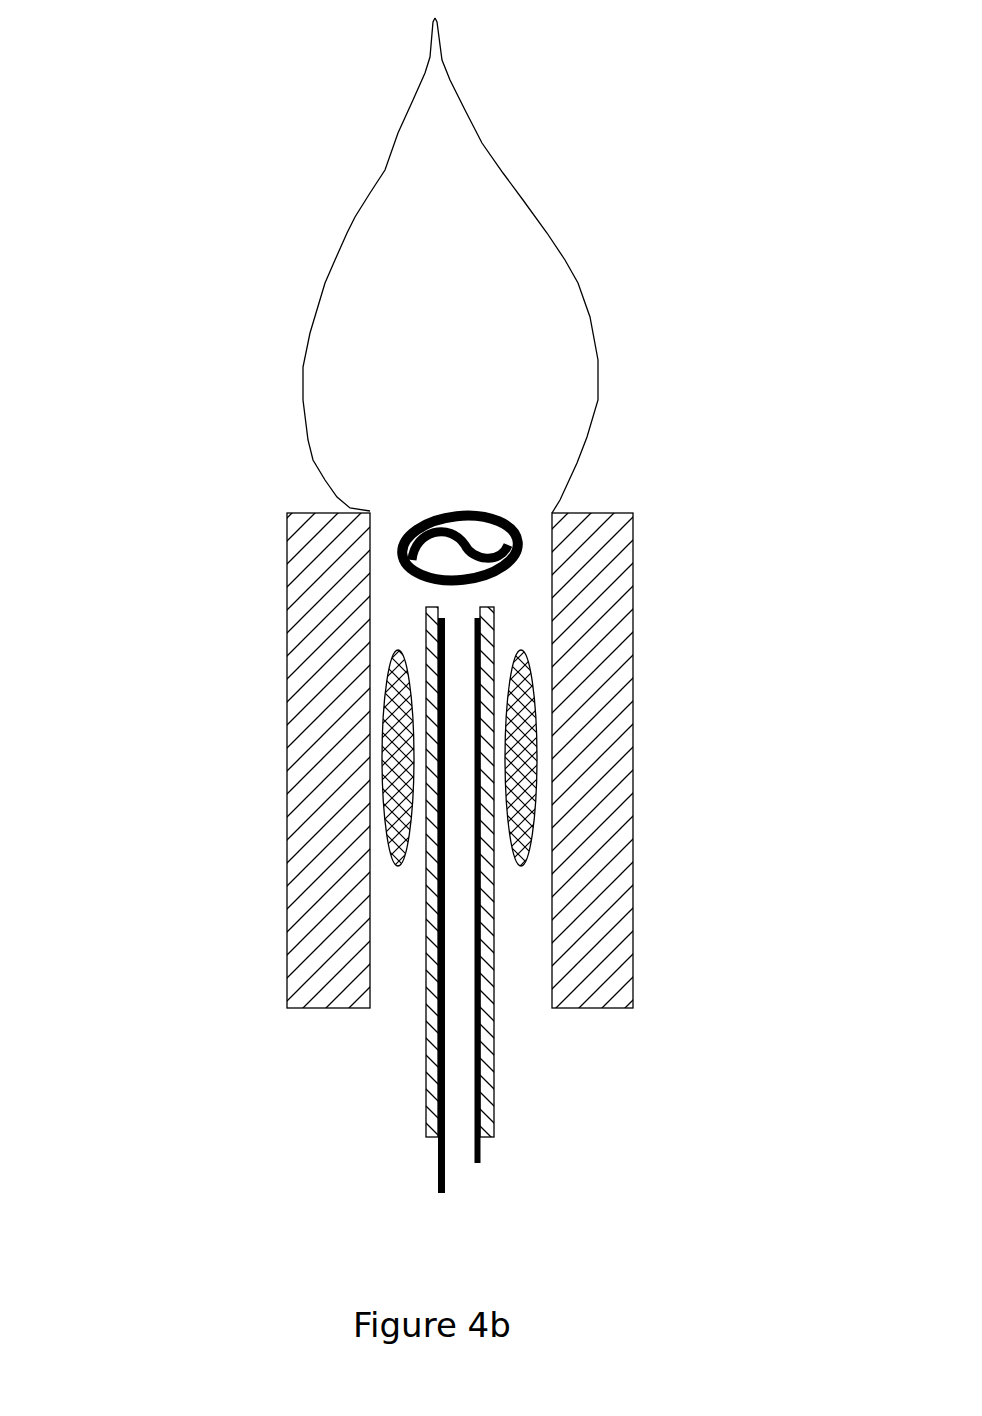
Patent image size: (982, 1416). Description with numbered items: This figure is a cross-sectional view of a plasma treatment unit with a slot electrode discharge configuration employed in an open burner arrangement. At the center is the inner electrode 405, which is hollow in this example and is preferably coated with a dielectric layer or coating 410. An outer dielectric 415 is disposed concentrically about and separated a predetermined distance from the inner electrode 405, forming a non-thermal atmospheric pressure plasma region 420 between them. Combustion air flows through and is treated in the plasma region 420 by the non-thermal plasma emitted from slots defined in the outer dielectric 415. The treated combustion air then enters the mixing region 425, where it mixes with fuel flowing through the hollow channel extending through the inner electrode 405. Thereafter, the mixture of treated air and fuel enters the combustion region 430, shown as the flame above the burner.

The combustion region 430 is at (650, 359).
The mixing region 425 is at (550, 536).
The dielectric layer or coating 410 is at (525, 671).
The inner electrode 405 is at (510, 722).
The non-thermal atmospheric pressure plasma region 420 is at (440, 801).
The outer dielectric 415 is at (250, 856).